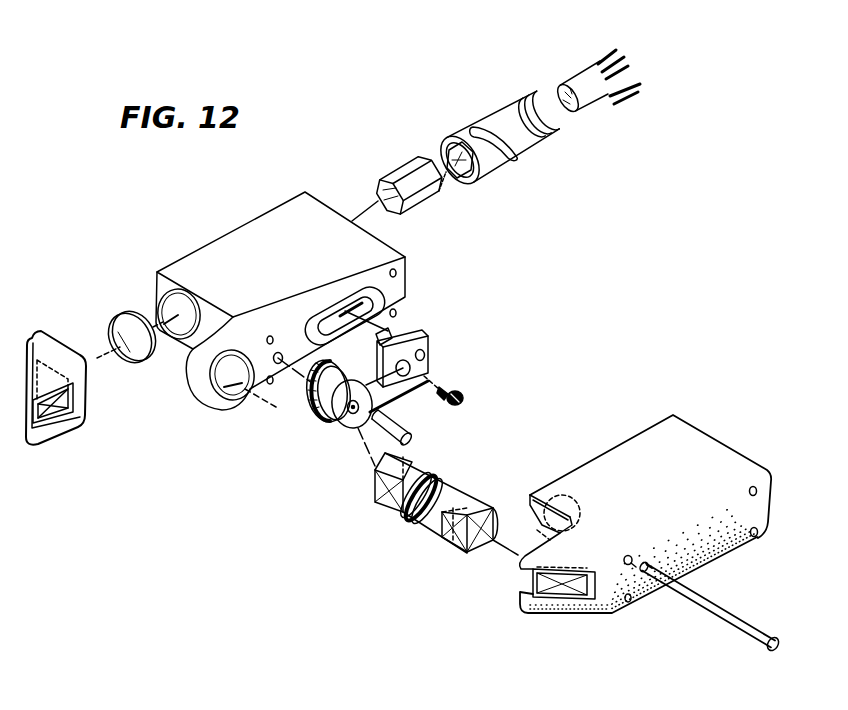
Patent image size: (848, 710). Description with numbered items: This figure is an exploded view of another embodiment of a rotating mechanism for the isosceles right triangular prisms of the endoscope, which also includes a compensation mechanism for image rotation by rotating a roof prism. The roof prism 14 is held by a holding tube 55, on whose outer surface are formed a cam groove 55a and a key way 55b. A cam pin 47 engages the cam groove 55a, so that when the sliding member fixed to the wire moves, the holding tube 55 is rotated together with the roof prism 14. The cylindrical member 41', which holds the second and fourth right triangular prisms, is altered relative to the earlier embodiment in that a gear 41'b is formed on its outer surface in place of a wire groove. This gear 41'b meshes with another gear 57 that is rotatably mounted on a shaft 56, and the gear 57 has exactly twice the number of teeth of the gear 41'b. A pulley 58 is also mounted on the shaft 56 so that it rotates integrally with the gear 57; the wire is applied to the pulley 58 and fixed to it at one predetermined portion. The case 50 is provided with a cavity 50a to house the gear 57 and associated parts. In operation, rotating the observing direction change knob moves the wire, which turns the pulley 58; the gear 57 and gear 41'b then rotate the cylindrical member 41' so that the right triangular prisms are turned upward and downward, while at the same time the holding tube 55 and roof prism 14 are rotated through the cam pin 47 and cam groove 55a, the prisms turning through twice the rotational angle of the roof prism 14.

The roof prism 14 is at (397, 170).
The holding tube 55 is at (493, 107).
The cam groove 55a is at (502, 138).
The key way 55b is at (529, 90).
The cam pin 47 is at (393, 331).
The shaft 56 is at (410, 424).
The gear 57 is at (310, 408).
The pulley 58 is at (303, 423).
The cylindrical member 41' is at (427, 509).
The gear 41'b is at (417, 523).
The case 50 is at (621, 439).
The cavity 50a is at (548, 497).